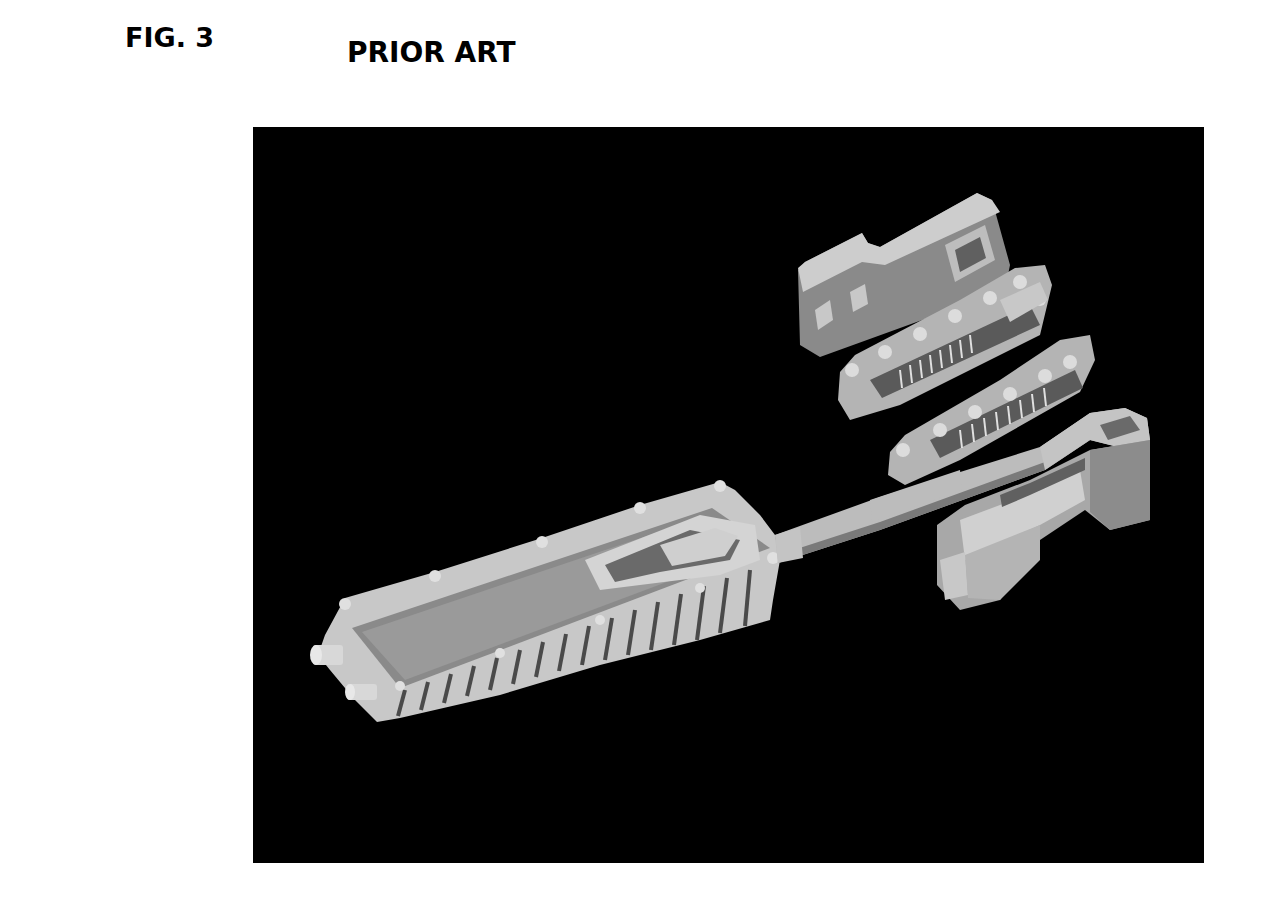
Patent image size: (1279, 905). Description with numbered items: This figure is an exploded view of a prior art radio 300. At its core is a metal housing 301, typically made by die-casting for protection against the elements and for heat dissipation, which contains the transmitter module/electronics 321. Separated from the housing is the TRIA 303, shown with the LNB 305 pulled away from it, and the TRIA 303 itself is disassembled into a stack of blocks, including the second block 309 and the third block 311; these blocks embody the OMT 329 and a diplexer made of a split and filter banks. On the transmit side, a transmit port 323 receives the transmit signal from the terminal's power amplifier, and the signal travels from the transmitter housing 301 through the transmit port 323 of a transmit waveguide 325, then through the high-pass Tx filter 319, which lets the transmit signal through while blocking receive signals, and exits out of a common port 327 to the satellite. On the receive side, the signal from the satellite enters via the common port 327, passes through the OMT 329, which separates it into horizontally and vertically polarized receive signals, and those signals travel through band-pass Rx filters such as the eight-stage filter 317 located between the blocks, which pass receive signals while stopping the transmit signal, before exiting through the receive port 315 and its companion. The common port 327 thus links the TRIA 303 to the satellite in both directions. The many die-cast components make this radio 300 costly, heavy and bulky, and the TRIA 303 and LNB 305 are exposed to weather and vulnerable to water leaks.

The radio 300 is at (187, 108).
The housing 301 is at (721, 641).
The TRIA 303 is at (1113, 524).
The LNB 305 is at (893, 246).
The second block 309 is at (1062, 397).
The third block 311 is at (1001, 300).
The receive port 315 is at (1031, 318).
The band-pass Rx filter 317 is at (1029, 425).
The high-pass Tx filter 319 is at (910, 523).
The transmitter module/electronics 321 is at (608, 563).
The transmit port 323 is at (797, 563).
The transmit waveguide 325 is at (815, 521).
The common port 327 is at (968, 606).
The OMT 329 is at (1010, 581).